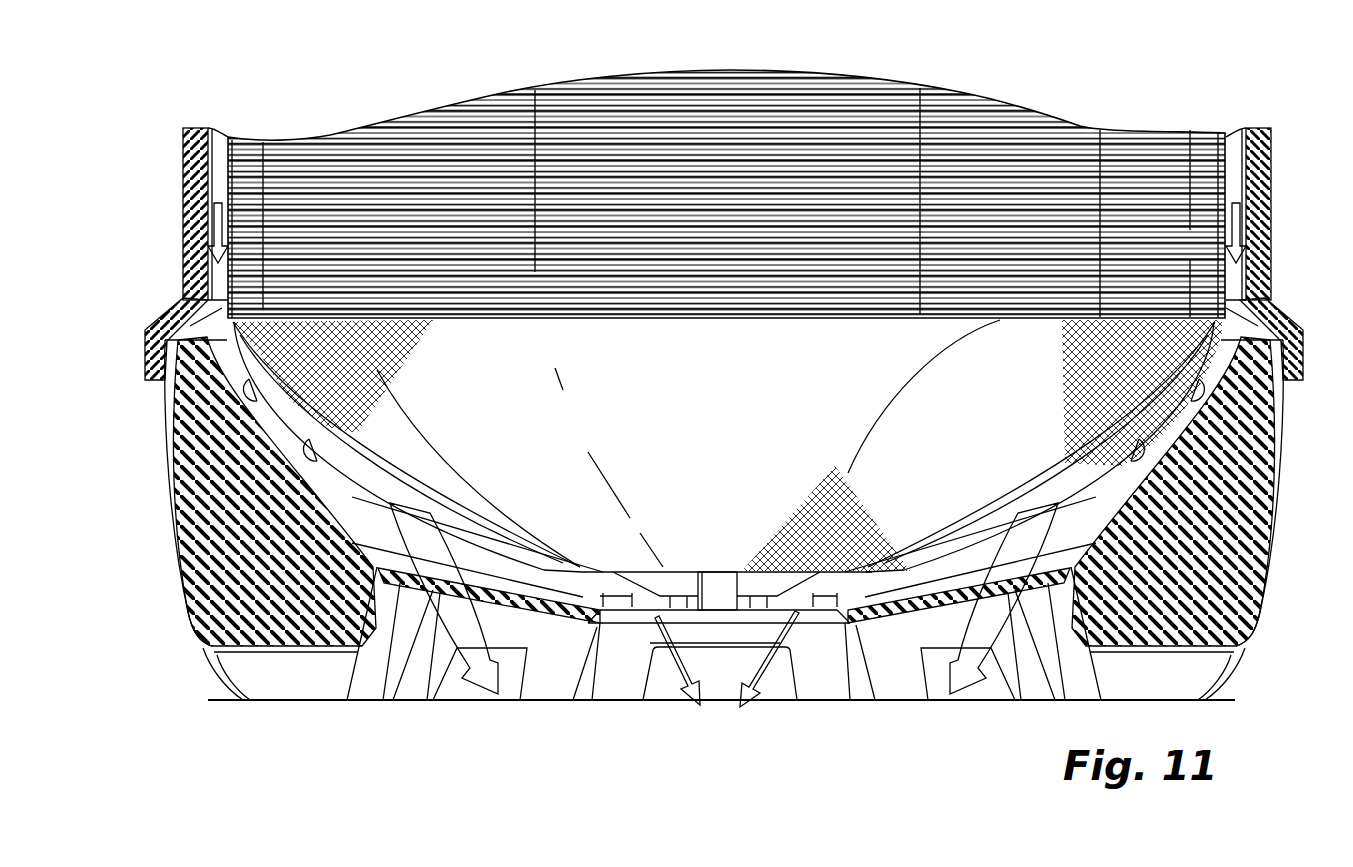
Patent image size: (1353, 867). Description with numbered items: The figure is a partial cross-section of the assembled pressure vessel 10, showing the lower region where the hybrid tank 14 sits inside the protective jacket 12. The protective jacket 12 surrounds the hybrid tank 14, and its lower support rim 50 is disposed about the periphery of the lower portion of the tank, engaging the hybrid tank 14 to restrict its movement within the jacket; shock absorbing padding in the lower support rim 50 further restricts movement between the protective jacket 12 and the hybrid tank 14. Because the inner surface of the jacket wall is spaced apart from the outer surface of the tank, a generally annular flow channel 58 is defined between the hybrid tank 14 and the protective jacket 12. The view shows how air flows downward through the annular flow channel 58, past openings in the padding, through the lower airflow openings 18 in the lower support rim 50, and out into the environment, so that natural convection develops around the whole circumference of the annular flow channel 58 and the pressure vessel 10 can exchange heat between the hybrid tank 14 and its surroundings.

The pressure vessel 10 is at (1290, 145).
The protective jacket 12 is at (182, 180).
The hybrid tank 14 is at (455, 140).
The lower airflow openings 18 is at (458, 590).
The lower support rim 50 is at (1253, 610).
The annular flow channel 58 is at (1235, 170).